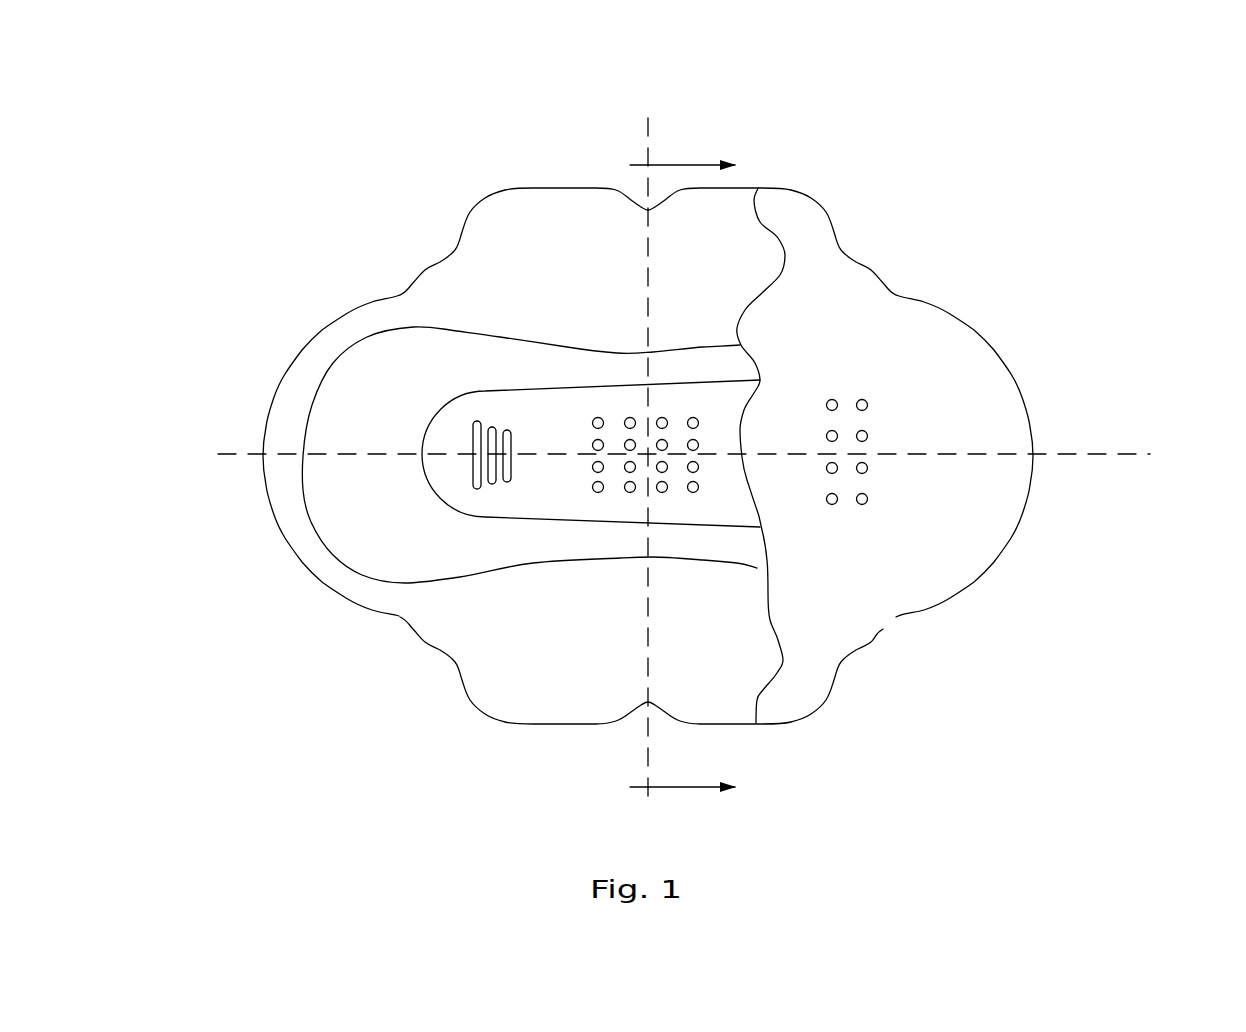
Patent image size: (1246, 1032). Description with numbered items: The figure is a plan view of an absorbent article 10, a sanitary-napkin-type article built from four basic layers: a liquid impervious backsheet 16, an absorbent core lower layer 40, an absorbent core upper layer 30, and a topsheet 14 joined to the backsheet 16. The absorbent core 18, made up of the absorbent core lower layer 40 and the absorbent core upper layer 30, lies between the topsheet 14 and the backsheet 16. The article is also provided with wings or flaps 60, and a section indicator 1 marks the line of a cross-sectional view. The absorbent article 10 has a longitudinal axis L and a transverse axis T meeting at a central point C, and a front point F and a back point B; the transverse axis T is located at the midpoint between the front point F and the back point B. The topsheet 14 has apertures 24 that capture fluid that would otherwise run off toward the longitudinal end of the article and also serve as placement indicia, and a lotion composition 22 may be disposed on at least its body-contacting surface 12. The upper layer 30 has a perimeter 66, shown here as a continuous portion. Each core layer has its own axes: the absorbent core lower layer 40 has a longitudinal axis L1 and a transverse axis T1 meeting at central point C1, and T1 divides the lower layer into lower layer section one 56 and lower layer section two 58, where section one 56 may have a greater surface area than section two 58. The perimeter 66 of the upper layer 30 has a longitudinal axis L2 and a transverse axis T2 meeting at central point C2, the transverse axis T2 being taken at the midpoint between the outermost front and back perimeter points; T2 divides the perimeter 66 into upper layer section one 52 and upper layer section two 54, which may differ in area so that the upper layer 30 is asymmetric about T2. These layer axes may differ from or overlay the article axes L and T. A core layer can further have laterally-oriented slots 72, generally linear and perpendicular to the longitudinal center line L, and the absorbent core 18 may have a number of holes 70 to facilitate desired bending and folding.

The absorbent article 10 is at (318, 262).
The body-contacting surface 12 is at (860, 587).
The topsheet 14 is at (937, 537).
The backsheet 16 is at (308, 378).
The absorbent core 18 is at (387, 532).
The lotion composition 22 is at (787, 540).
The apertures 24 is at (870, 437).
The absorbent core upper layer 30 is at (480, 507).
The absorbent core lower layer 40 is at (357, 552).
The upper layer section one 52 is at (723, 424).
The upper layer section two 54 is at (467, 407).
The lower layer section one 56 is at (327, 485).
The lower layer section two 58 is at (707, 372).
The wings 60 is at (578, 670).
The perimeter 66 is at (500, 392).
The holes 70 is at (597, 495).
The slots 72 is at (474, 470).
The section line 1 is at (699, 463).
The back point B is at (262, 452).
The front point F is at (1033, 453).
The longitudinal axis L is at (1063, 453).
The longitudinal axis of the absorbent core lower layer L1 is at (1063, 453).
The longitudinal axis of the absorbent core upper layer perimeter L2 is at (1063, 453).
The transverse axis T is at (650, 118).
The transverse axis of the absorbent core lower layer T1 is at (650, 118).
The transverse axis of the absorbent core upper layer perimeter T2 is at (650, 118).
The central point C is at (652, 455).
The central point C1 is at (660, 463).
The central point C2 is at (657, 463).